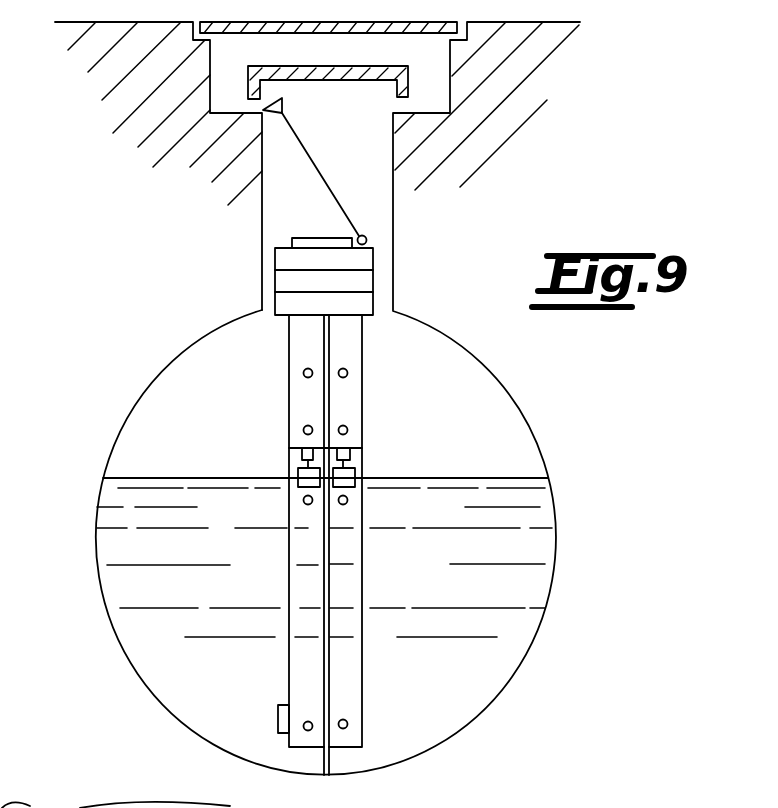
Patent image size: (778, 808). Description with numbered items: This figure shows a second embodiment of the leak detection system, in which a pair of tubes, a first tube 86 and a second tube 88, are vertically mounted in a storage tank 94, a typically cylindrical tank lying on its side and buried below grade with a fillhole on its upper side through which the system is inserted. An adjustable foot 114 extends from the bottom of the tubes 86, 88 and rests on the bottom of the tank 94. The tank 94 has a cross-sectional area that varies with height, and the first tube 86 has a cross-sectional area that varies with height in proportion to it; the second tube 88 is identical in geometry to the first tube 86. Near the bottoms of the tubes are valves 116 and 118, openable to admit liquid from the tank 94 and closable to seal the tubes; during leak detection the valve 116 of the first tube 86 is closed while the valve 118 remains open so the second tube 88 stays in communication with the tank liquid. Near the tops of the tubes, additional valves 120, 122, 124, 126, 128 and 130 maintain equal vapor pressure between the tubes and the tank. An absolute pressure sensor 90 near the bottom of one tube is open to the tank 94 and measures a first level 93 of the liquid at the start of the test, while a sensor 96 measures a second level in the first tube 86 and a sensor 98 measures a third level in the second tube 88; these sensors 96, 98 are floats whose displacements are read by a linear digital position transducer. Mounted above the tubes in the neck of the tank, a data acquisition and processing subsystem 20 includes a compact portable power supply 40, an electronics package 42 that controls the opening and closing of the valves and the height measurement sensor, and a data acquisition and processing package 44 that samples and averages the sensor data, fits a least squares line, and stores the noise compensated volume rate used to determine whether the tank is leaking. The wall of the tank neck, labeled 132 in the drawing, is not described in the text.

The data acquisition and processing subsystem 20 is at (381, 238).
The compact portable power supply 40 is at (373, 307).
The electronics package 42 is at (373, 280).
The data acquisition and processing package 44 is at (373, 262).
The first tube 86 is at (289, 577).
The second tube 88 is at (363, 575).
The absolute pressure sensor 90 is at (278, 720).
The first level 93 is at (190, 478).
The storage tank 94 is at (158, 372).
The sensor 96 is at (298, 472).
The sensor 98 is at (355, 473).
The adjustable foot 114 is at (332, 760).
The valve 116 is at (306, 722).
The valve 118 is at (347, 720).
The additional valve 120 is at (304, 500).
The additional valve 122 is at (304, 430).
The additional valve 124 is at (304, 373).
The additional valve 126 is at (348, 500).
The additional valve 128 is at (348, 430).
The additional valve 130 is at (348, 373).
The tank neck wall 132 is at (262, 262).